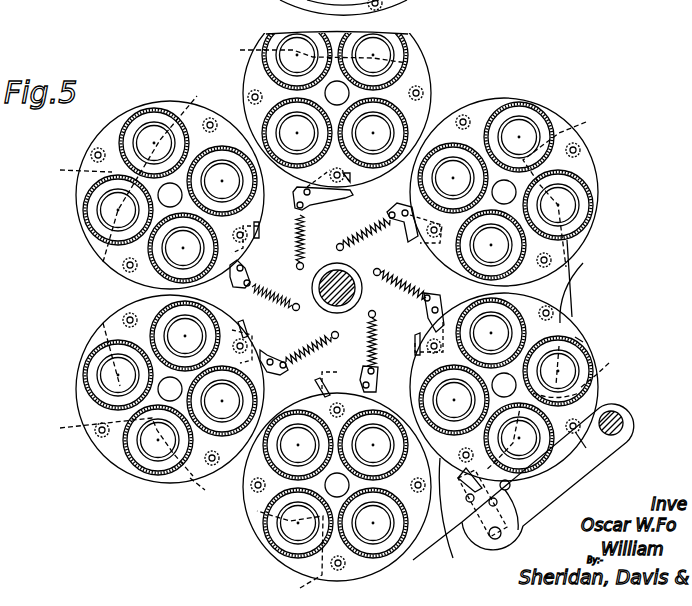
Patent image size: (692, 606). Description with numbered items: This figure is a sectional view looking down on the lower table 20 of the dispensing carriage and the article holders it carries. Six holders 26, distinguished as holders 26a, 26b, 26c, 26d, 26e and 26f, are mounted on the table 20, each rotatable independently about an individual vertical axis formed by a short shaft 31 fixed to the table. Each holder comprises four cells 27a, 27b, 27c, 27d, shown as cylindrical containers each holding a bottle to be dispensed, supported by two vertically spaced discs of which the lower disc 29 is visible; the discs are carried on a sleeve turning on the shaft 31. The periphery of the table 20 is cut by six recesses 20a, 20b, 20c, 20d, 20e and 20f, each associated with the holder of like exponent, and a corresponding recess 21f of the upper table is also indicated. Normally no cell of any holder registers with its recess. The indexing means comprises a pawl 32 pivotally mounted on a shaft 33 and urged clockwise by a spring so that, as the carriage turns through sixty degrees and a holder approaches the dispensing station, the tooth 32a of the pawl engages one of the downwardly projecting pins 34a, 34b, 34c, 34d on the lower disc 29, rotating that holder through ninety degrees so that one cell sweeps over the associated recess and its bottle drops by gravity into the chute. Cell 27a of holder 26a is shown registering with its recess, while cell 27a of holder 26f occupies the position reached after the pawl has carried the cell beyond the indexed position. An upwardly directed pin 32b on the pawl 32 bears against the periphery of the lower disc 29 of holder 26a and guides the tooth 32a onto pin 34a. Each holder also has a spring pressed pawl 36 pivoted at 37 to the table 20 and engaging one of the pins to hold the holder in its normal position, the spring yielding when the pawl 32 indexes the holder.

The table 20 is at (213, 480).
The recess 20a is at (560, 408).
The recess 20b is at (566, 186).
The recess 20c is at (308, 51).
The recess 20d is at (110, 179).
The recess 20e is at (105, 399).
The recess 20f is at (290, 556).
The recess 21f is at (404, 2).
The article holder 26 is at (565, 108).
The article holder 26a is at (573, 330).
The article holder 26b is at (590, 170).
The article holder 26c is at (418, 64).
The article holder 26d is at (117, 122).
The article holder 26e is at (100, 338).
The article holder 26f is at (295, 558).
The cell 27a is at (593, 212).
The cell 27b is at (380, 386).
The cell 27c is at (468, 310).
The cell 27d is at (583, 342).
The lower disc 29 is at (573, 290).
The shaft 31 is at (566, 270).
The pawl 32 is at (548, 488).
The tooth 32a is at (452, 556).
The pin 32b is at (497, 540).
The shaft 33 is at (624, 423).
The pin 34a is at (578, 436).
The pin 34b is at (459, 482).
The pin 34c is at (438, 340).
The pin 34d is at (593, 272).
The spring pressed pawl 36 is at (248, 264).
The pivot 37 is at (252, 276).